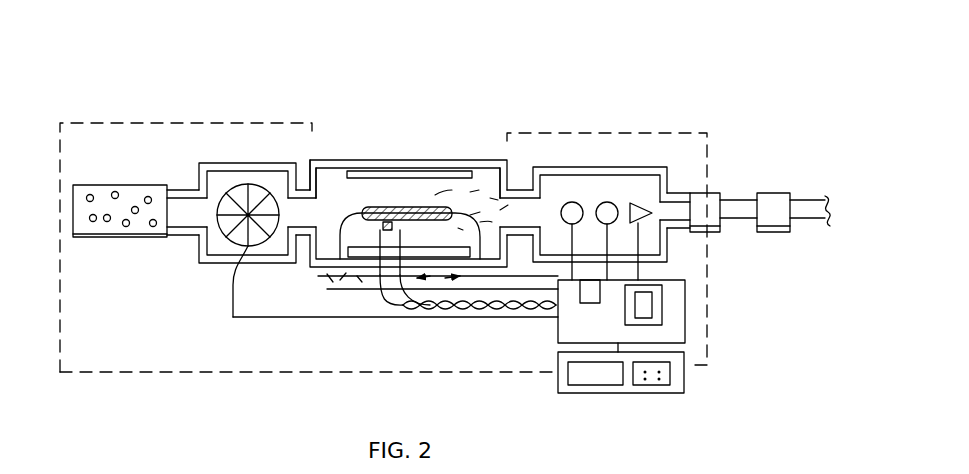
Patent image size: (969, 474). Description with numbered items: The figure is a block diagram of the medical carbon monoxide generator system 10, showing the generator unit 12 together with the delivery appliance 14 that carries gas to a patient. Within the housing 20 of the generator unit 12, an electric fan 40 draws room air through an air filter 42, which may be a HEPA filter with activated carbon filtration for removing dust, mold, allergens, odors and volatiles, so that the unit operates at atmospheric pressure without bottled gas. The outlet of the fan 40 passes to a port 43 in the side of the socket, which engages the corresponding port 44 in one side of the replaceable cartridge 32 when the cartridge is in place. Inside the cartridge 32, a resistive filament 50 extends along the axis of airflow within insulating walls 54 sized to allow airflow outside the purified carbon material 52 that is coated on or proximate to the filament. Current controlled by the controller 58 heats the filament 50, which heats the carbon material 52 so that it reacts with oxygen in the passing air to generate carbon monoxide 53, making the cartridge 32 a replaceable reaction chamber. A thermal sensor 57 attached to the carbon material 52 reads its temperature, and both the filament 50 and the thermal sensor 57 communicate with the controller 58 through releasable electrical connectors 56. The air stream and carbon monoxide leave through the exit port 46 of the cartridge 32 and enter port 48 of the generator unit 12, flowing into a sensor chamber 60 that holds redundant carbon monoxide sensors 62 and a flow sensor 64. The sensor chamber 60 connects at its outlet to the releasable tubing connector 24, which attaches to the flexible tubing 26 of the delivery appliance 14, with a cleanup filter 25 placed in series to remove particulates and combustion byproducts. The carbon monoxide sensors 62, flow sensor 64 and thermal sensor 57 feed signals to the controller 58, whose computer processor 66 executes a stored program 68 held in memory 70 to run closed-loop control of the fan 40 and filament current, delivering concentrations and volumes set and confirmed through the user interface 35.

The medical carbon monoxide generator system 10 is at (808, 73).
The generator unit 12 is at (752, 110).
The delivery appliance 14 is at (858, 270).
The housing 20 is at (108, 123).
The releasable tubing connector 24 is at (712, 197).
The cleanup filter 25 is at (771, 200).
The flexible tubing 26 is at (822, 205).
The replaceable cartridge 32 is at (448, 87).
The user interface 35 is at (684, 372).
The electric fan 40 is at (242, 214).
The air filter 42 is at (133, 185).
The port 43 is at (294, 155).
The port 44 is at (318, 155).
The exit port 46 is at (516, 150).
The port 48 is at (535, 150).
The resistive filament 50 is at (300, 290).
The purified carbon material 52 is at (380, 207).
The carbon monoxide 53 is at (477, 193).
The insulating walls 54 is at (360, 289).
The releasable electrical connectors 56 is at (401, 264).
The thermal sensor 57 is at (398, 221).
The controller 58 is at (685, 343).
The sensor chamber 60 is at (637, 193).
The carbon monoxide sensors 62 is at (607, 202).
The flow sensor 64 is at (638, 203).
The computer processor 66 is at (591, 296).
The stored program 68 is at (643, 308).
The memory 70 is at (649, 312).